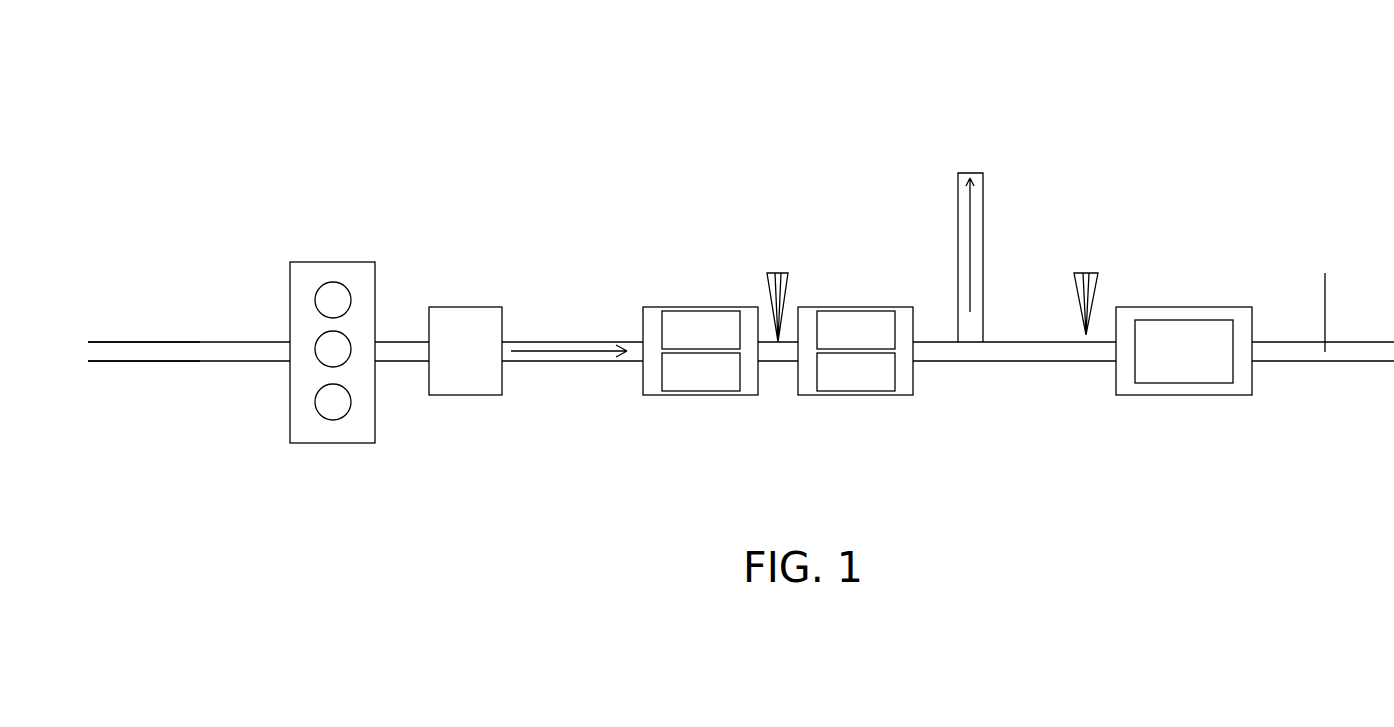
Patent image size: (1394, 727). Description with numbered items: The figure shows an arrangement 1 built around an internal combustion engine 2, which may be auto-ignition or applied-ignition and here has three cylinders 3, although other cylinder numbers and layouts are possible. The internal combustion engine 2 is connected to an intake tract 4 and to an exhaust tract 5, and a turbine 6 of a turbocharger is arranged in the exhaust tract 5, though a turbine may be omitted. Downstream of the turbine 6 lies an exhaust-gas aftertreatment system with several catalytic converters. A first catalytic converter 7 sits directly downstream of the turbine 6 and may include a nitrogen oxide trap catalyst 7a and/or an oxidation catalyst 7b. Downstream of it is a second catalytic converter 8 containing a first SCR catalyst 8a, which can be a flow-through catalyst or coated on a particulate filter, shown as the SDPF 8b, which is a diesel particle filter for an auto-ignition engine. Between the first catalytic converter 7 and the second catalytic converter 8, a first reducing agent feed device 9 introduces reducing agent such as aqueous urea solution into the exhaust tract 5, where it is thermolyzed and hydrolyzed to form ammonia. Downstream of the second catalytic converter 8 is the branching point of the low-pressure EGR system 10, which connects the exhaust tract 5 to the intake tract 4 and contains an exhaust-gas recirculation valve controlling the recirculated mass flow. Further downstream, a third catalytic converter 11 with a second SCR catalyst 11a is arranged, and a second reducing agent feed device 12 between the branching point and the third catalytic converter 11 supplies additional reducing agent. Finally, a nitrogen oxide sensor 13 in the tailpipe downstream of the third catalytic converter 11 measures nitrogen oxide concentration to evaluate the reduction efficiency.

The arrangement 1 is at (1265, 88).
The internal combustion engine 2 is at (290, 288).
The cylinders 3 is at (330, 400).
The intake tract 4 is at (107, 347).
The exhaust tract 5 is at (555, 350).
The turbine 6 is at (461, 318).
The first catalytic converter 7 is at (652, 307).
The nitrogen oxide trap catalyst 7a is at (723, 391).
The oxidation catalyst 7b is at (702, 313).
The second catalytic converter 8 is at (883, 391).
The first SCR catalyst 8a is at (885, 313).
The particle filter (SDPF) 8b is at (838, 391).
The first reducing agent feed device 9 is at (778, 207).
The low-pressure EGR system 10 is at (978, 197).
The third catalytic converter 11 is at (1183, 307).
The second SCR catalyst 11a is at (1192, 373).
The second reducing agent feed device 12 is at (1085, 208).
The nitrogen oxide sensor 13 is at (1316, 203).